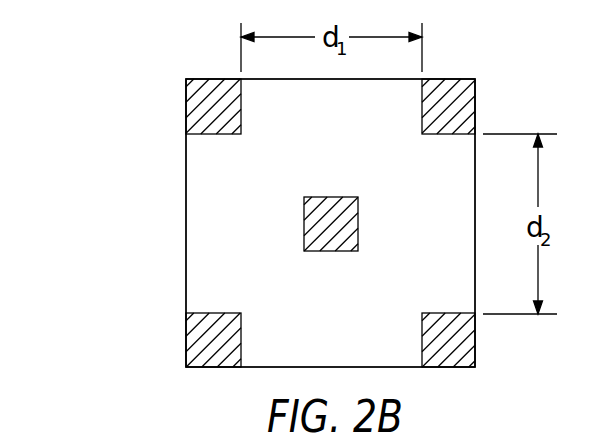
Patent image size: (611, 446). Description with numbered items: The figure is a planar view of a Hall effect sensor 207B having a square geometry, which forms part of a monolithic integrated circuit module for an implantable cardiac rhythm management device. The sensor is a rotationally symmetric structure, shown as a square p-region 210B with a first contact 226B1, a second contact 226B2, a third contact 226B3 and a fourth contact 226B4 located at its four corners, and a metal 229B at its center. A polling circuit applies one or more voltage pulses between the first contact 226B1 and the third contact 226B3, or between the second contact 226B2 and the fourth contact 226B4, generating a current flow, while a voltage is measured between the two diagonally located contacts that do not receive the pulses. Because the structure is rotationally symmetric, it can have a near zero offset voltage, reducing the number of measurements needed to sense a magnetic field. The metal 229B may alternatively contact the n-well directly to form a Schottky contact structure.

The Hall effect sensor 207B is at (462, 50).
The p-region 210B is at (203, 209).
The first contact 226B1 is at (186, 341).
The second contact 226B2 is at (476, 343).
The third contact 226B3 is at (476, 108).
The fourth contact 226B4 is at (186, 108).
The metal 229B is at (359, 223).